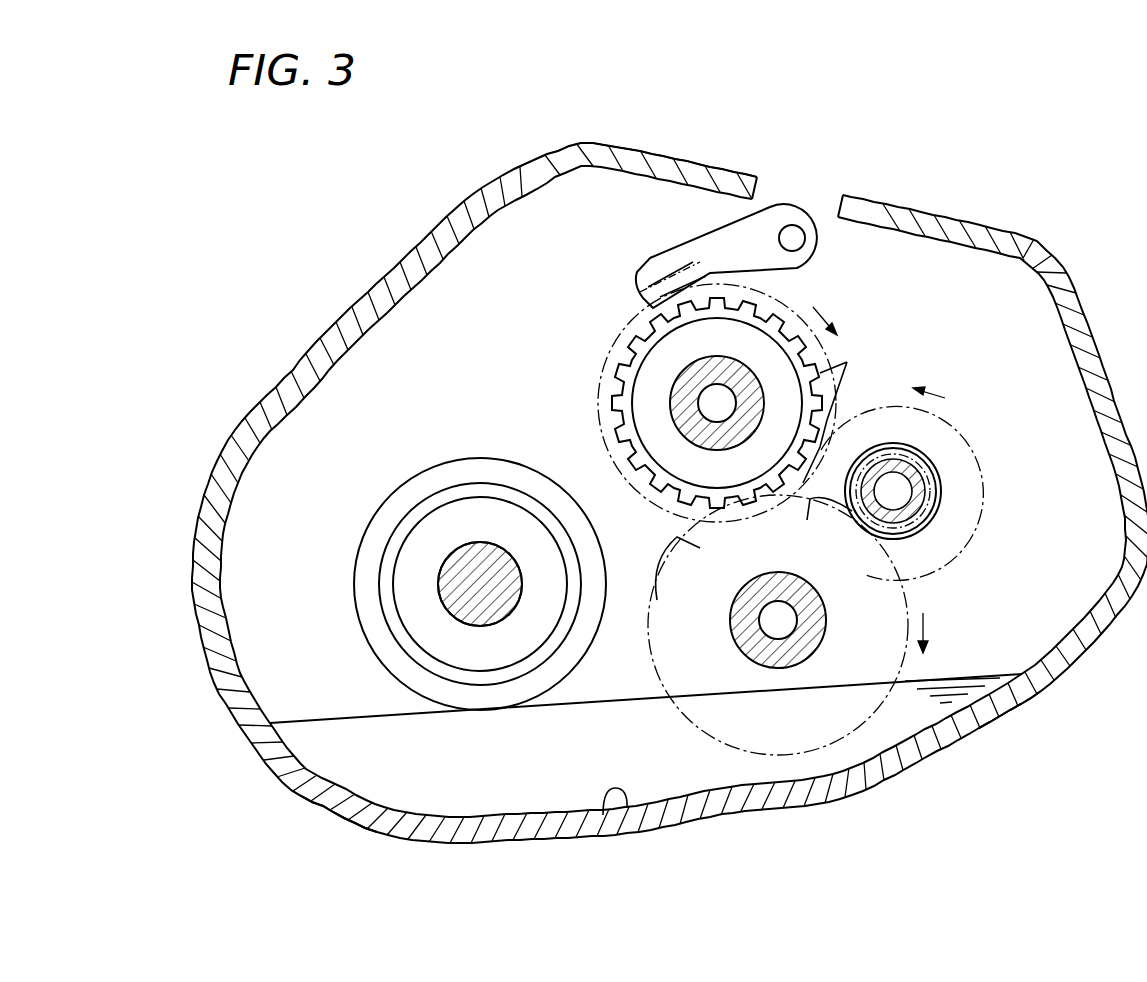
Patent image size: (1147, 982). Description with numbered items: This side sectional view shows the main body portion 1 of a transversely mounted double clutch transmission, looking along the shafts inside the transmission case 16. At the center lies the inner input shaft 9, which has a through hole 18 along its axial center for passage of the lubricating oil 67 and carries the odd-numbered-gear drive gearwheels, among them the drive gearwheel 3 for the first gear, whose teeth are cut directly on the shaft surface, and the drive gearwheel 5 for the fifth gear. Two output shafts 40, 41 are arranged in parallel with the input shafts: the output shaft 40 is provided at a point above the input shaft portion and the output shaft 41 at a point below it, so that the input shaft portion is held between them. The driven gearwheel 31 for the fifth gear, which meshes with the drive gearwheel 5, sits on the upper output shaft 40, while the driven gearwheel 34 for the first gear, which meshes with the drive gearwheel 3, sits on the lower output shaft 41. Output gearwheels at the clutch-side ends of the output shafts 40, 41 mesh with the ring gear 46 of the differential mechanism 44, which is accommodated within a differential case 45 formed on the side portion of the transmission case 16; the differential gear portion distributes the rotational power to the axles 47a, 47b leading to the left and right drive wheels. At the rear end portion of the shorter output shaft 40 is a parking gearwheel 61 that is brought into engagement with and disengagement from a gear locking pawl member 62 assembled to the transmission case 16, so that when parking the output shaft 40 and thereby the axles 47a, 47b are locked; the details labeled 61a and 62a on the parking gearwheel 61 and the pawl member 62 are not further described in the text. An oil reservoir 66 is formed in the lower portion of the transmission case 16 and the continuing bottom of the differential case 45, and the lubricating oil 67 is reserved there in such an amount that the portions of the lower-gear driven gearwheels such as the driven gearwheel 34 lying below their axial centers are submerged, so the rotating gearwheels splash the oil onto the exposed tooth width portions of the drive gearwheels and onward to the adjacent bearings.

The main body portion 1 is at (640, 125).
The drive gearwheel for the first gear 3 is at (947, 487).
The drive gearwheel for the fifth gear 5 is at (993, 508).
The input shaft 9 is at (928, 470).
The transmission case 16 is at (1012, 707).
The through hole 18 is at (893, 488).
The driven gearwheel for the fifth gear 31 is at (608, 395).
The driven gearwheel for the first gear 34 is at (908, 598).
The output shaft 40 is at (676, 397).
The output shaft 41 is at (748, 580).
The differential mechanism 44 is at (415, 425).
The differential case 45 is at (360, 834).
The ring gear 46 is at (393, 503).
The axle 47a is at (440, 598).
The axle 47b is at (480, 584).
The parking gearwheel 61 is at (785, 336).
The pawl 61a is at (848, 361).
The gear locking pawl member 62 is at (670, 256).
The engaging portion 62a is at (644, 298).
The oil reservoir 66 is at (623, 790).
The lubricating oil 67 is at (646, 726).